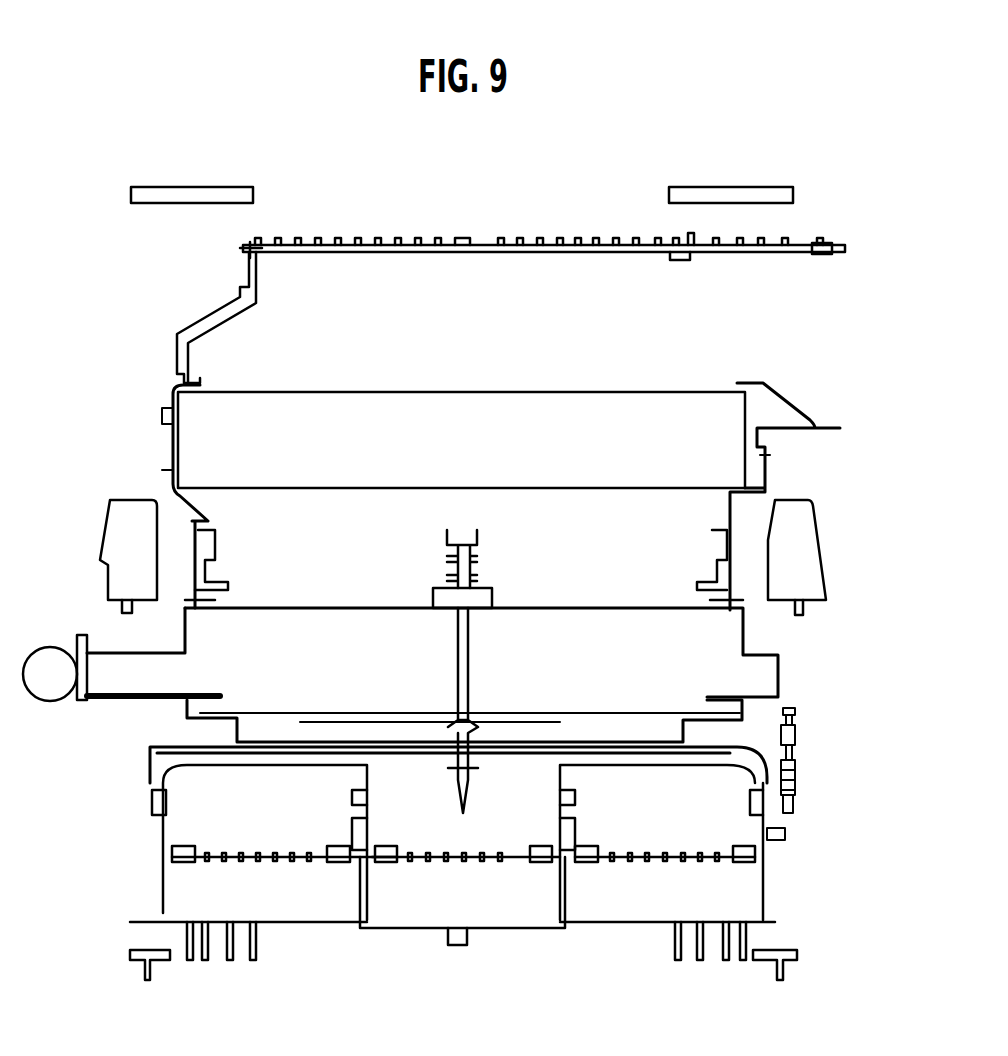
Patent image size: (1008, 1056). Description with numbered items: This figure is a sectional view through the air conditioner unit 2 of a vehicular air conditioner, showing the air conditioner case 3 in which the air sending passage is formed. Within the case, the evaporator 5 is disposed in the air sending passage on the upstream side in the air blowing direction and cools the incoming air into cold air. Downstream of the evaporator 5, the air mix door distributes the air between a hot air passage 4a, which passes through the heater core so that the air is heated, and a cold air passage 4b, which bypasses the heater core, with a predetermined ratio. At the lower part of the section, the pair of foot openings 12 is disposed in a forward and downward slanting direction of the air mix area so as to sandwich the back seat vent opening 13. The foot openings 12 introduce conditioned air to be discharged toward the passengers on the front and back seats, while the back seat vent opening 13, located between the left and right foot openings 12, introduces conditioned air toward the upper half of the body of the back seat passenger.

The air conditioner unit 2 is at (91, 273).
The air conditioner case 3 is at (178, 350).
The evaporator 5 is at (412, 408).
The hot air passage 4a is at (647, 720).
The cold air passage 4b is at (596, 568).
The foot openings 12 is at (276, 913).
The back seat vent opening 13 is at (444, 918).